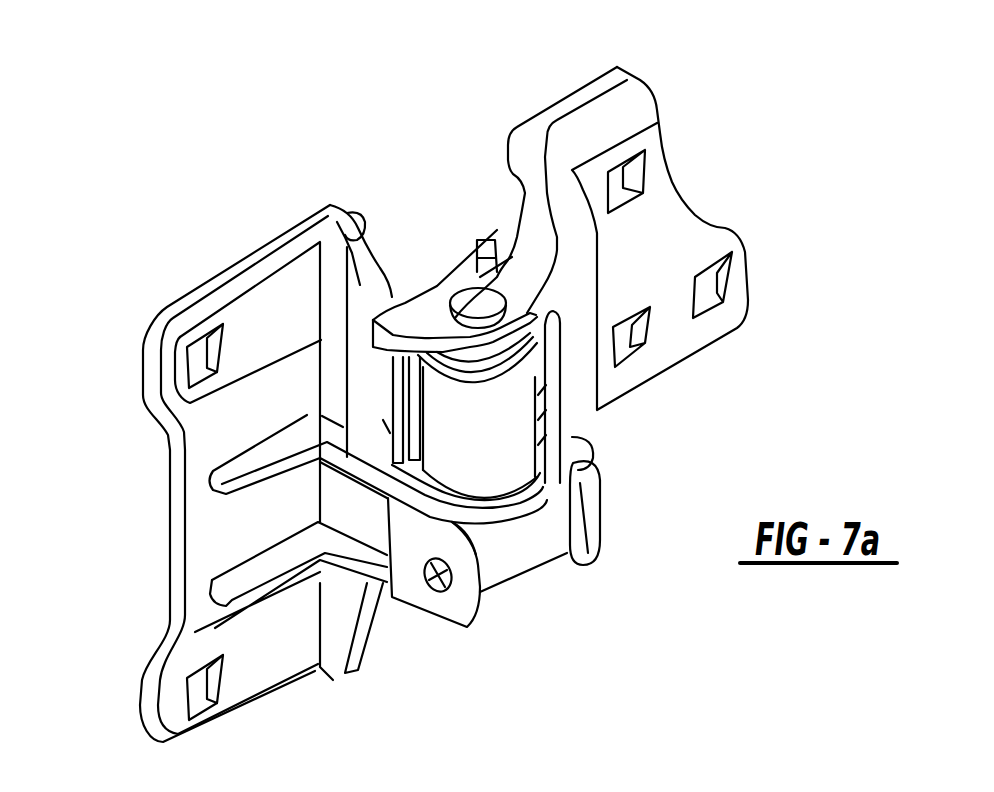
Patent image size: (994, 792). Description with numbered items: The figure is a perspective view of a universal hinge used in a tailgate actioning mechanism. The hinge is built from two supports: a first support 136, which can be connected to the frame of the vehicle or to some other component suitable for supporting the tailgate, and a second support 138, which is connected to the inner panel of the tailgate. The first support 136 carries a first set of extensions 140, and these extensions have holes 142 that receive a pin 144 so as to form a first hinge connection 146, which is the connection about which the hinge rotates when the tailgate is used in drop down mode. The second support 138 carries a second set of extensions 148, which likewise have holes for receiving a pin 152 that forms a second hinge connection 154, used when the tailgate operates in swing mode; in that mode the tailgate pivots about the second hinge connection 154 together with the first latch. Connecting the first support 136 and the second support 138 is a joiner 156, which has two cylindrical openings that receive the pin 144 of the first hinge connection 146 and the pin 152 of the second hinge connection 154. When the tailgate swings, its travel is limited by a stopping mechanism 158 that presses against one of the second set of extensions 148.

The first support 136 is at (233, 273).
The second support 138 is at (633, 110).
The first set of extensions 140 is at (590, 530).
The holes 142 is at (445, 588).
The pin 144 is at (433, 587).
The first hinge connection 146 is at (562, 588).
The second set of extensions 148 is at (450, 240).
The pin 152 is at (463, 303).
The second hinge connection 154 is at (426, 148).
The joiner 156 is at (322, 278).
The stopping mechanism 158 is at (487, 238).